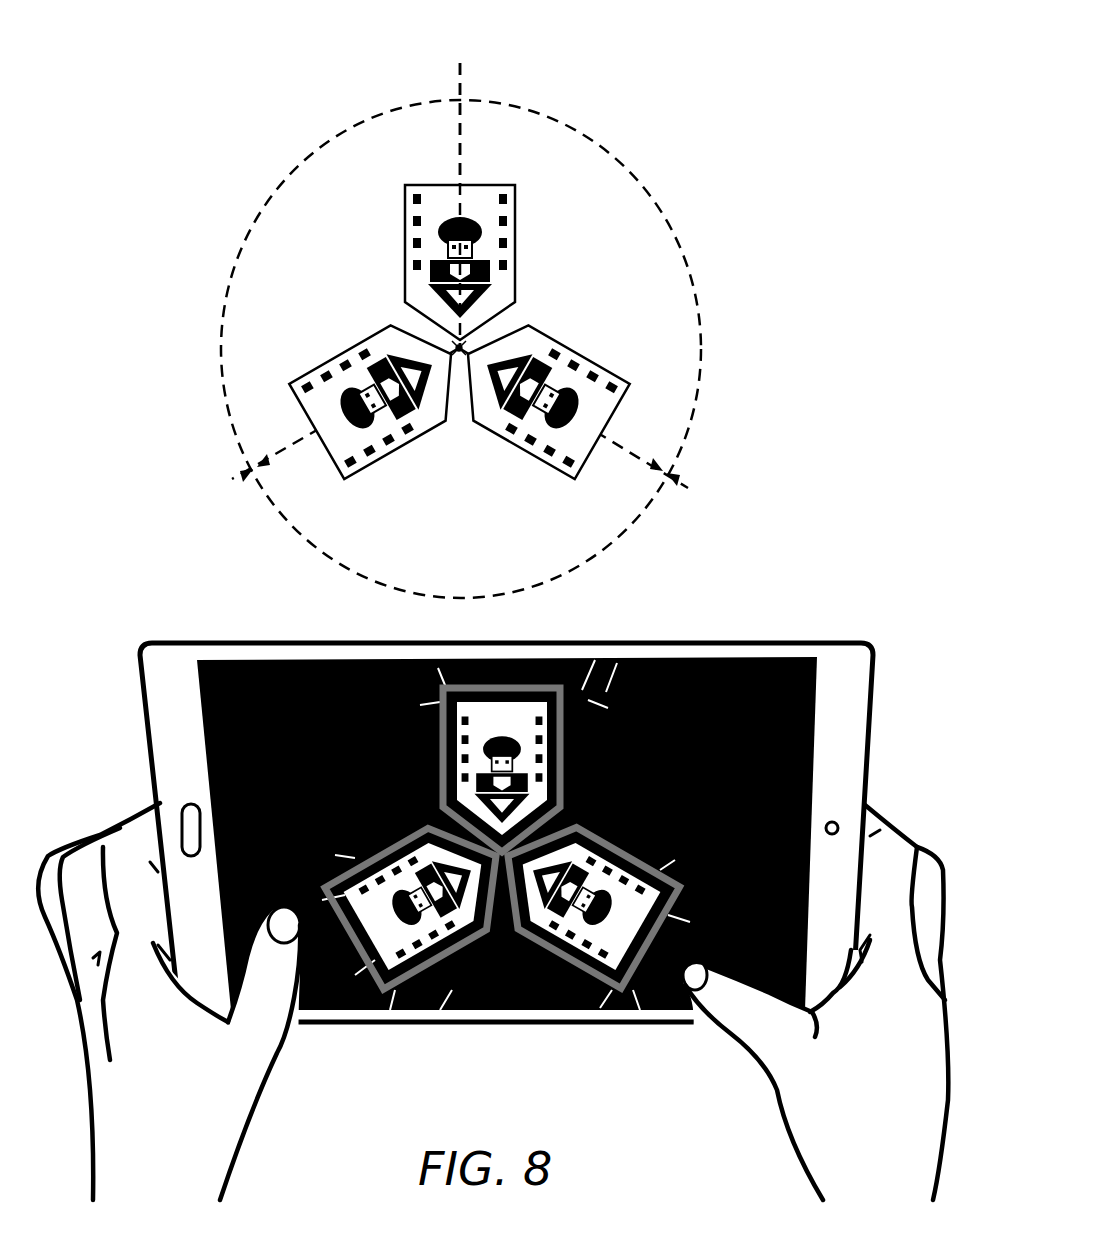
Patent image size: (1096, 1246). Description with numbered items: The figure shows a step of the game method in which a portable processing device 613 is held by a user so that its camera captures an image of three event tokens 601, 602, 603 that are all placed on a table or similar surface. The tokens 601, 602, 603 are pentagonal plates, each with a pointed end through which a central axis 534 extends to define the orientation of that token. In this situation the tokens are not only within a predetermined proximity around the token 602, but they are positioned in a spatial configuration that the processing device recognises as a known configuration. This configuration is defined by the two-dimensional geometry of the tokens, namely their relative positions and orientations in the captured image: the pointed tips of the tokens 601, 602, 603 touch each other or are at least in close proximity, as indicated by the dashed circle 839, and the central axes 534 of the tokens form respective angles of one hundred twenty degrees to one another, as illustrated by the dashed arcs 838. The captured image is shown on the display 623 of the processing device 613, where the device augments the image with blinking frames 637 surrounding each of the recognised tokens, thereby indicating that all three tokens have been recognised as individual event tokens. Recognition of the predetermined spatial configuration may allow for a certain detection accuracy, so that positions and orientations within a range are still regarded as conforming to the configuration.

The axis 534 is at (460, 63).
The dashed arcs 838 is at (262, 198).
The dashed circle 839 is at (455, 345).
The event token 601 is at (360, 347).
The event token 602 is at (517, 233).
The event token 603 is at (562, 347).
The portable processing device 613 is at (185, 642).
The display 623 is at (470, 1015).
The blinking frames 637 is at (382, 848).